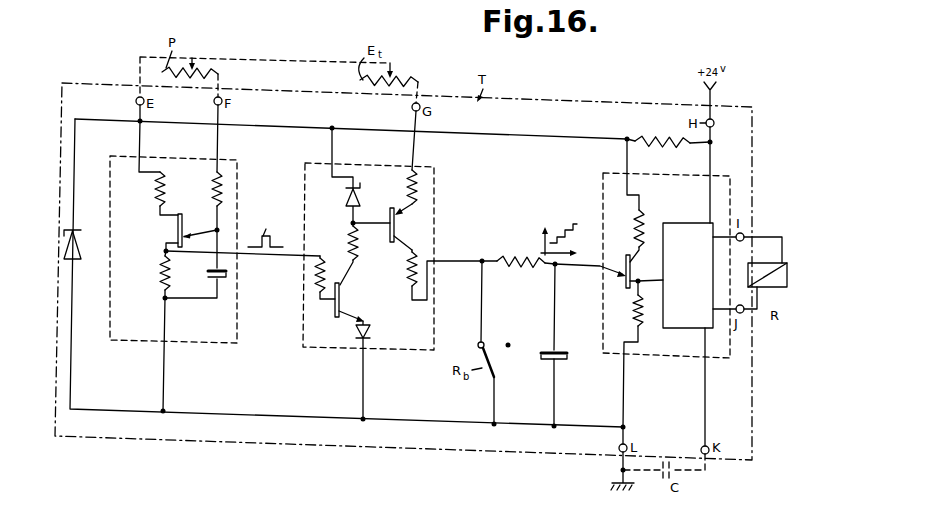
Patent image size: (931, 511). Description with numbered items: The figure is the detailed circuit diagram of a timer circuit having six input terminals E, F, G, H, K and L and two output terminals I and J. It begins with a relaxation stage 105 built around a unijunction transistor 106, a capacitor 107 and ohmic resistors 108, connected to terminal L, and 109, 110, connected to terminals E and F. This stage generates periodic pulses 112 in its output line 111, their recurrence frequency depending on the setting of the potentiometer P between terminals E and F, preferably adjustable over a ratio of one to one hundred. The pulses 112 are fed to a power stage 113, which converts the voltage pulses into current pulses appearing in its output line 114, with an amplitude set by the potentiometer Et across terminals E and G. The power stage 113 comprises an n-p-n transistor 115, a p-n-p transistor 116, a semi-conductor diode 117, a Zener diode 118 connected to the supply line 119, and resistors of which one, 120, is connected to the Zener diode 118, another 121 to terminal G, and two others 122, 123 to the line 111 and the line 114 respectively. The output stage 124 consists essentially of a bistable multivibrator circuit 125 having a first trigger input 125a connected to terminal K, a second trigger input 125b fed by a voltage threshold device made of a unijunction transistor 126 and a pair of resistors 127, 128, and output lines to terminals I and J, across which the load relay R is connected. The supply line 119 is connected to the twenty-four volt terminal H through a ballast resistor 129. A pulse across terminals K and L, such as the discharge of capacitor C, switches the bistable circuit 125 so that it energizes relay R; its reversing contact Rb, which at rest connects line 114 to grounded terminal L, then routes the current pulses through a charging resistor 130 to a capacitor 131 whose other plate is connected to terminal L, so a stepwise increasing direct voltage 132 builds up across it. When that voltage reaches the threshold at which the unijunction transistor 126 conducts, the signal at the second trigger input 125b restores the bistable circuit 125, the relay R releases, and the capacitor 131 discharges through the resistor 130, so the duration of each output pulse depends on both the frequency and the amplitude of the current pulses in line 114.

The relaxation stage 105 is at (114, 344).
The unijunction transistor 106 is at (172, 231).
The capacitor 107 is at (223, 285).
The ohmic resistor 108 is at (160, 272).
The ohmic resistor 109 is at (152, 188).
The ohmic resistor 110 is at (223, 200).
The output line 111 is at (245, 256).
The periodic pulses 112 is at (268, 231).
The power stage 113 is at (320, 350).
The output line 114 is at (456, 264).
The n-p-n transistor 115 is at (345, 301).
The p-n-p transistor 116 is at (402, 226).
The semi-conductor diode 117 is at (371, 335).
The Zener diode 118 is at (357, 201).
The supply line 119 is at (493, 137).
The ohmic resistor 120 is at (363, 254).
The ohmic resistor 121 is at (420, 187).
The ohmic resistor 122 is at (317, 285).
The ohmic resistor 123 is at (414, 259).
The output stage 124 is at (732, 180).
The bistable multivibrator circuit 125 is at (688, 275).
The first trigger input 125a is at (703, 354).
The second trigger input 125b is at (655, 284).
The unijunction transistor 126 is at (622, 281).
The ohmic resistor 127 is at (642, 215).
The ohmic resistor 128 is at (633, 308).
The ballast resistor 129 is at (651, 139).
The charging resistor 130 is at (512, 258).
The capacitor 131 is at (548, 345).
The stepwise increasing voltage 132 is at (567, 235).